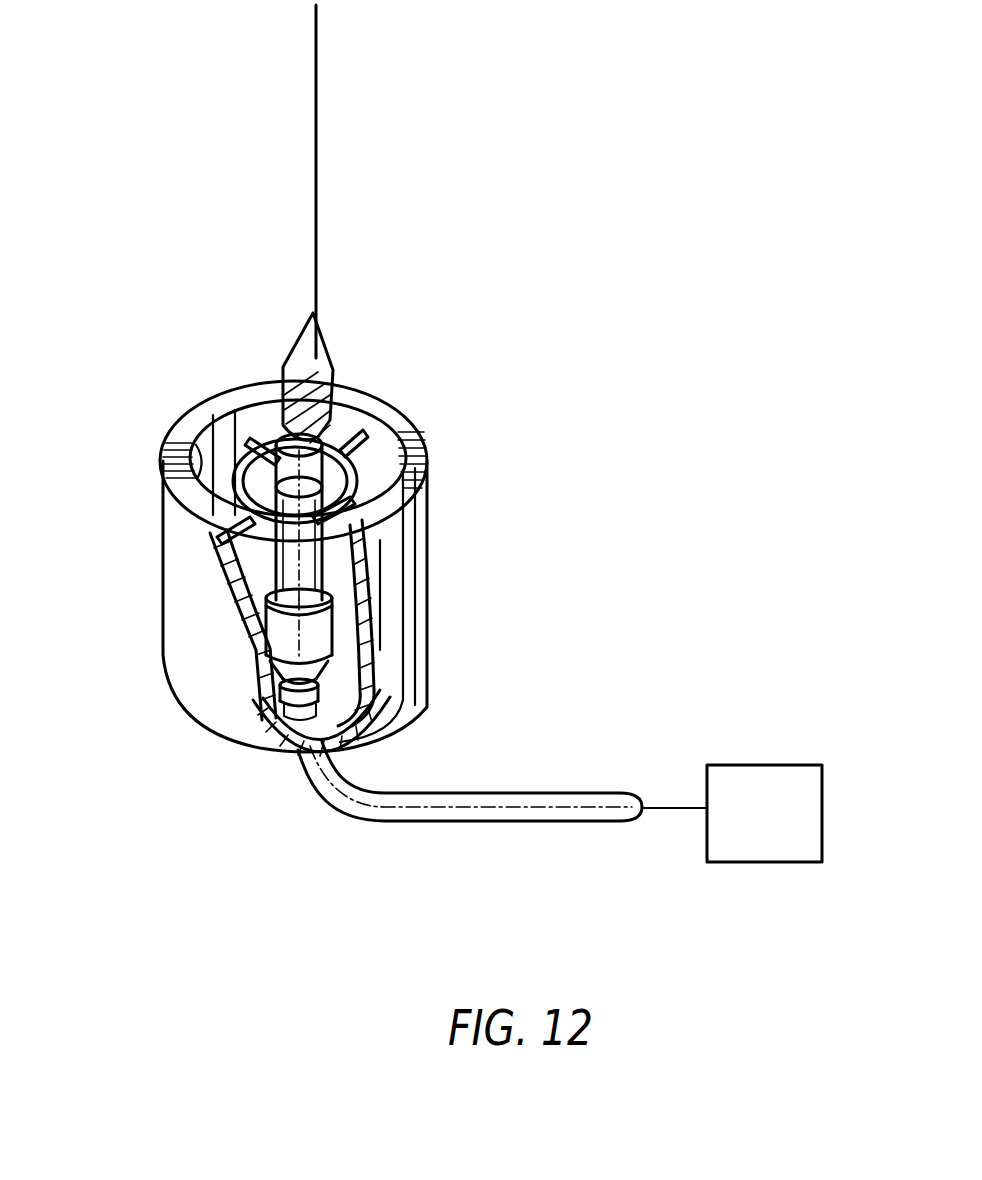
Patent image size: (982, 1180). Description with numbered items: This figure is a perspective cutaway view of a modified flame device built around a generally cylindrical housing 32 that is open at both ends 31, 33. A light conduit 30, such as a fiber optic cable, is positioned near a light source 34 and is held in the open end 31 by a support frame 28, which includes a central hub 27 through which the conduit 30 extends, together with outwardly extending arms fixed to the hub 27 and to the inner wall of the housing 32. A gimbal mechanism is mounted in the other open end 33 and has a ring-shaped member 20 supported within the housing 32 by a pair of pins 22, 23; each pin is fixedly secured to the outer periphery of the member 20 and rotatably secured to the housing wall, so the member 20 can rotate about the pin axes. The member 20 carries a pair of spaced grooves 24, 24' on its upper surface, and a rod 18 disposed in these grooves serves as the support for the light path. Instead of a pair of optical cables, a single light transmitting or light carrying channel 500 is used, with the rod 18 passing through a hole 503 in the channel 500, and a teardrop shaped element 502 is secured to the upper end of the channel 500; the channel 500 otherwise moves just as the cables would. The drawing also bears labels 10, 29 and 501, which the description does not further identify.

The guide wire 10 is at (316, 129).
The teardrop shaped element 502 is at (307, 335).
The light transmitting channel 500 is at (280, 433).
The groove 24' is at (242, 440).
The open end 33 is at (196, 444).
The pin 22 is at (240, 498).
The ring-shaped member 20 is at (365, 445).
The pin 23 is at (335, 476).
The hole 503 is at (318, 487).
The rod 18 is at (345, 478).
The groove 24 is at (367, 623).
The cylinder body 501 is at (335, 635).
The support frame 28 is at (308, 677).
The retaining ring 29 is at (315, 698).
The central hub 27 is at (290, 705).
The housing 32 is at (180, 620).
The open end 31 is at (168, 712).
The light conduit 30 is at (553, 793).
The light source 34 is at (763, 765).